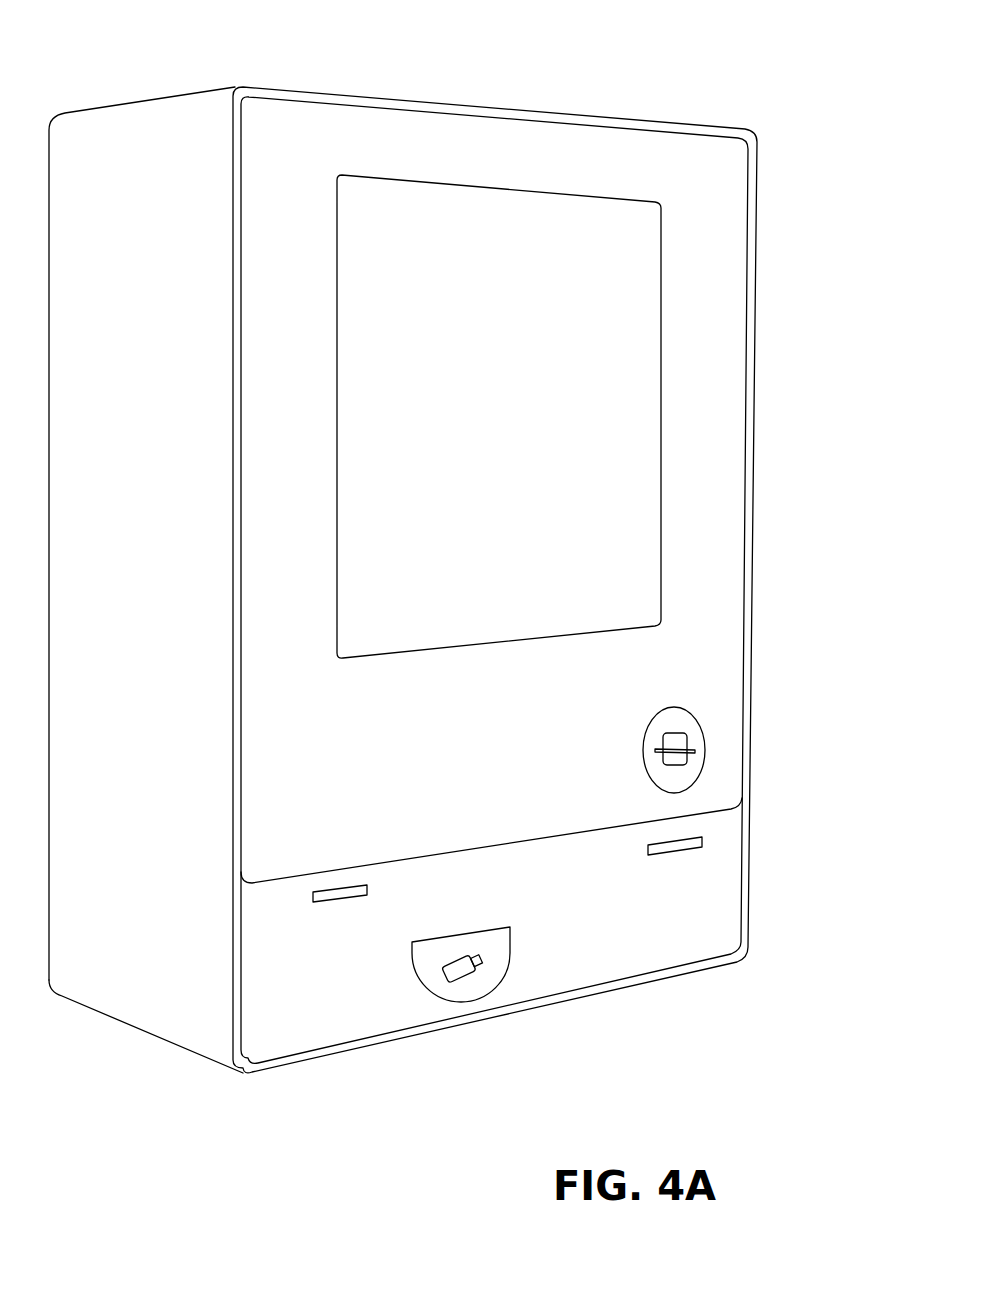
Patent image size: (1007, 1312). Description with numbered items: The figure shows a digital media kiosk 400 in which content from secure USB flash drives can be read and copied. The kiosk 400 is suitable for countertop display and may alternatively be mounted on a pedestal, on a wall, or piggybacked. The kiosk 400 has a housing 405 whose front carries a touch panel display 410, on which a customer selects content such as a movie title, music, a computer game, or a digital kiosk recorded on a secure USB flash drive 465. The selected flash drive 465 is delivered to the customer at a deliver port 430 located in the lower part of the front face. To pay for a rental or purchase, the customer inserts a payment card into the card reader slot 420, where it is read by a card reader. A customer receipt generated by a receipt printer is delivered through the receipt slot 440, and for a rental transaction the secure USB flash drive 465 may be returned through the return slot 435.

The digital media kiosk 400 is at (735, 70).
The housing 405 is at (140, 118).
The touch panel display 410 is at (537, 324).
The card reader slot 420 is at (693, 747).
The deliver port 430 is at (453, 996).
The return slot 435 is at (335, 903).
The receipt slot 440 is at (687, 851).
The secure USB flash drive 465 is at (468, 980).